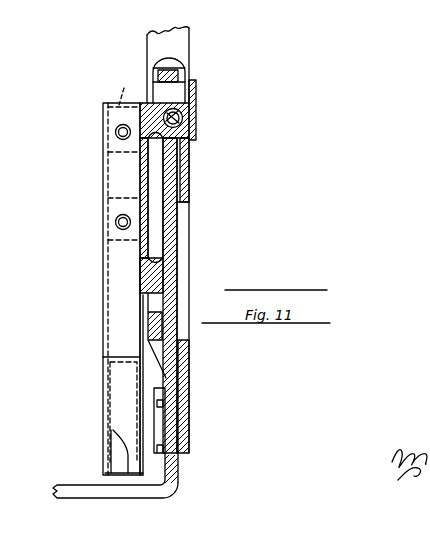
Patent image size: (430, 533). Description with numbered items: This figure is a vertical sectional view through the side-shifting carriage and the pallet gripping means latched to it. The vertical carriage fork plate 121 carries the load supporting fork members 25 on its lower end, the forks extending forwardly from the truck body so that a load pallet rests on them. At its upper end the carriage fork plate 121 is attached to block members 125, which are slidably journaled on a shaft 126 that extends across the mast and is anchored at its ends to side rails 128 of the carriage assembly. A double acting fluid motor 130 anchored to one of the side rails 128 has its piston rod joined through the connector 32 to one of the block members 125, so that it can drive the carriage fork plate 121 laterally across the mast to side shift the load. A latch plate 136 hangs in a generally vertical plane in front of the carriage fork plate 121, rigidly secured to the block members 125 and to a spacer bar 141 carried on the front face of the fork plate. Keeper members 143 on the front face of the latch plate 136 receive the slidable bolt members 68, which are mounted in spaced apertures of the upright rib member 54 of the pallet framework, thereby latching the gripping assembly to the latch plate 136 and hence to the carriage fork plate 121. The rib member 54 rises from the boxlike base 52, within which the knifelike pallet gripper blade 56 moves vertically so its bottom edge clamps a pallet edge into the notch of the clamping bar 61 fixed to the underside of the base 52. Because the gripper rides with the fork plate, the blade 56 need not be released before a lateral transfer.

The side rails 128 is at (174, 29).
The double acting fluid motor 130 is at (165, 50).
The plunger 32 is at (210, 44).
The keeper members 143 is at (120, 198).
The bolt members 68 is at (115, 132).
The shaft 126 is at (193, 107).
The block members 125 is at (196, 118).
The latch plate 136 is at (147, 217).
The carriage fork plate 121 is at (175, 229).
The spacer bar 141 is at (170, 272).
The upright rib member 54 is at (105, 311).
The boxlike base 52 is at (128, 357).
The pallet gripper blade 56 is at (111, 453).
The load supporting fork members 25 is at (72, 487).
The clamping bar 61 is at (113, 473).